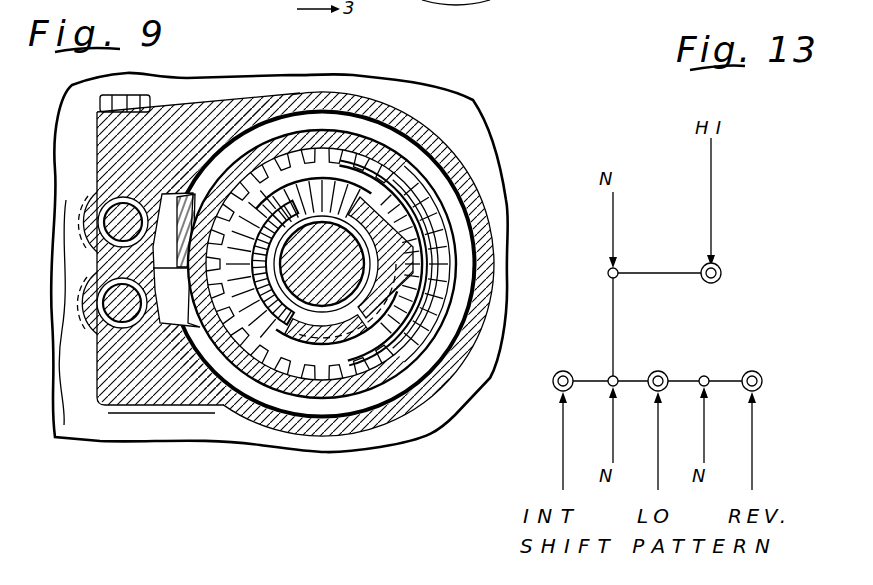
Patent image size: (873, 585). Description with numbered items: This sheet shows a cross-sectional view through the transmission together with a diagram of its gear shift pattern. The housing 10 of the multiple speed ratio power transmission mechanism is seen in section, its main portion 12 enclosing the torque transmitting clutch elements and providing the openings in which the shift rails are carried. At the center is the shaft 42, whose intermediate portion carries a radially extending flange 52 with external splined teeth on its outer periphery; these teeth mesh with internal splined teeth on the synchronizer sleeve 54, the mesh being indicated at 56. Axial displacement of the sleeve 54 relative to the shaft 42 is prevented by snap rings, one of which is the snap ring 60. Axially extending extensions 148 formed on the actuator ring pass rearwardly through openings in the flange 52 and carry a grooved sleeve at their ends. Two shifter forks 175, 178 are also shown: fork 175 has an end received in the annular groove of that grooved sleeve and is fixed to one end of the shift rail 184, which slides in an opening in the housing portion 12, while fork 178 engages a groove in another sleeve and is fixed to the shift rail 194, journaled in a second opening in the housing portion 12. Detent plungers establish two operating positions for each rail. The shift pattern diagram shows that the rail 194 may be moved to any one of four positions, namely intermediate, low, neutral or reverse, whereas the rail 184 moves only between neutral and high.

The housing 10 is at (363, 73).
The main portion 12 is at (217, 100).
The shaft 42 is at (331, 292).
The radially extending flange 52 is at (286, 324).
The synchronizer sleeve 54 is at (353, 204).
The splined tooth mesh 56 is at (245, 362).
The snap ring 60 is at (427, 282).
The axially extending extensions 148 is at (397, 223).
The shifter fork 175 is at (195, 195).
The shifter fork 178 is at (197, 327).
The shift rail 184 is at (97, 212).
The shift rail 194 is at (125, 312).